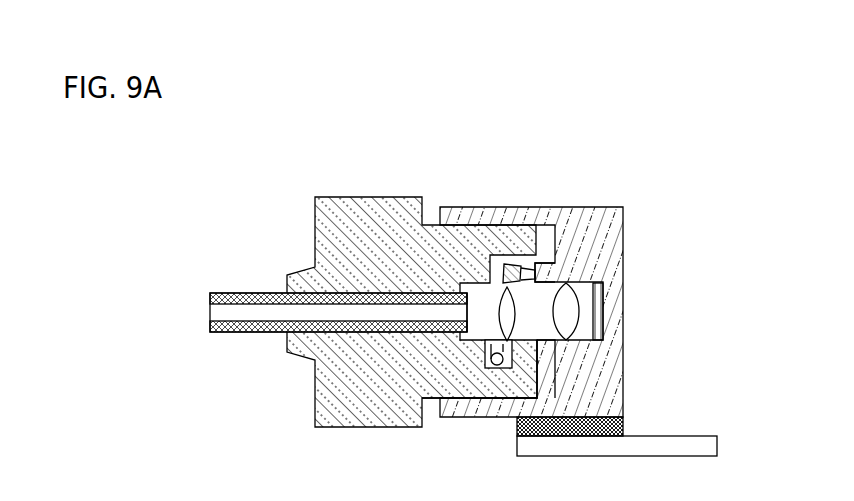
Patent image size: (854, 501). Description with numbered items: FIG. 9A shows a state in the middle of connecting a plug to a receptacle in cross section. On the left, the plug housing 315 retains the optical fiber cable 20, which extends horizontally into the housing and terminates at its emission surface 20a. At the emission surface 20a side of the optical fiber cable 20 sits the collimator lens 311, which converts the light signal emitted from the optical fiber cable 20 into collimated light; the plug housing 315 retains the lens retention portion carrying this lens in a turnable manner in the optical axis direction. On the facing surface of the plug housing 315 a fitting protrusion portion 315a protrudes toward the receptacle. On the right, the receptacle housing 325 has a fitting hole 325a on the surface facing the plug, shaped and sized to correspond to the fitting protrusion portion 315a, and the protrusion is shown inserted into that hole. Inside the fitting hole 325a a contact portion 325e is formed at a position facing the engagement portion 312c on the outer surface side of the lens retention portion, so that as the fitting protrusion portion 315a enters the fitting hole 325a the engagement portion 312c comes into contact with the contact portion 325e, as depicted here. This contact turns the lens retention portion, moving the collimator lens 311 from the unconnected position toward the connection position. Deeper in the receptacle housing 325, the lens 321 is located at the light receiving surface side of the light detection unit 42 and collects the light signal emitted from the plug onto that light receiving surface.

The optical fiber cable 20 is at (252, 292).
The emission surface 20a is at (469, 316).
The plug housing 315 is at (307, 215).
The fitting protrusion portion 315a is at (428, 399).
The receptacle housing 325 is at (628, 207).
The contact portion 325e is at (543, 262).
The fitting hole 325a is at (543, 387).
The engagement portion 312c is at (535, 265).
The collimator lens 311 is at (517, 346).
The lens 321 is at (563, 312).
The light detection unit 42 is at (597, 312).